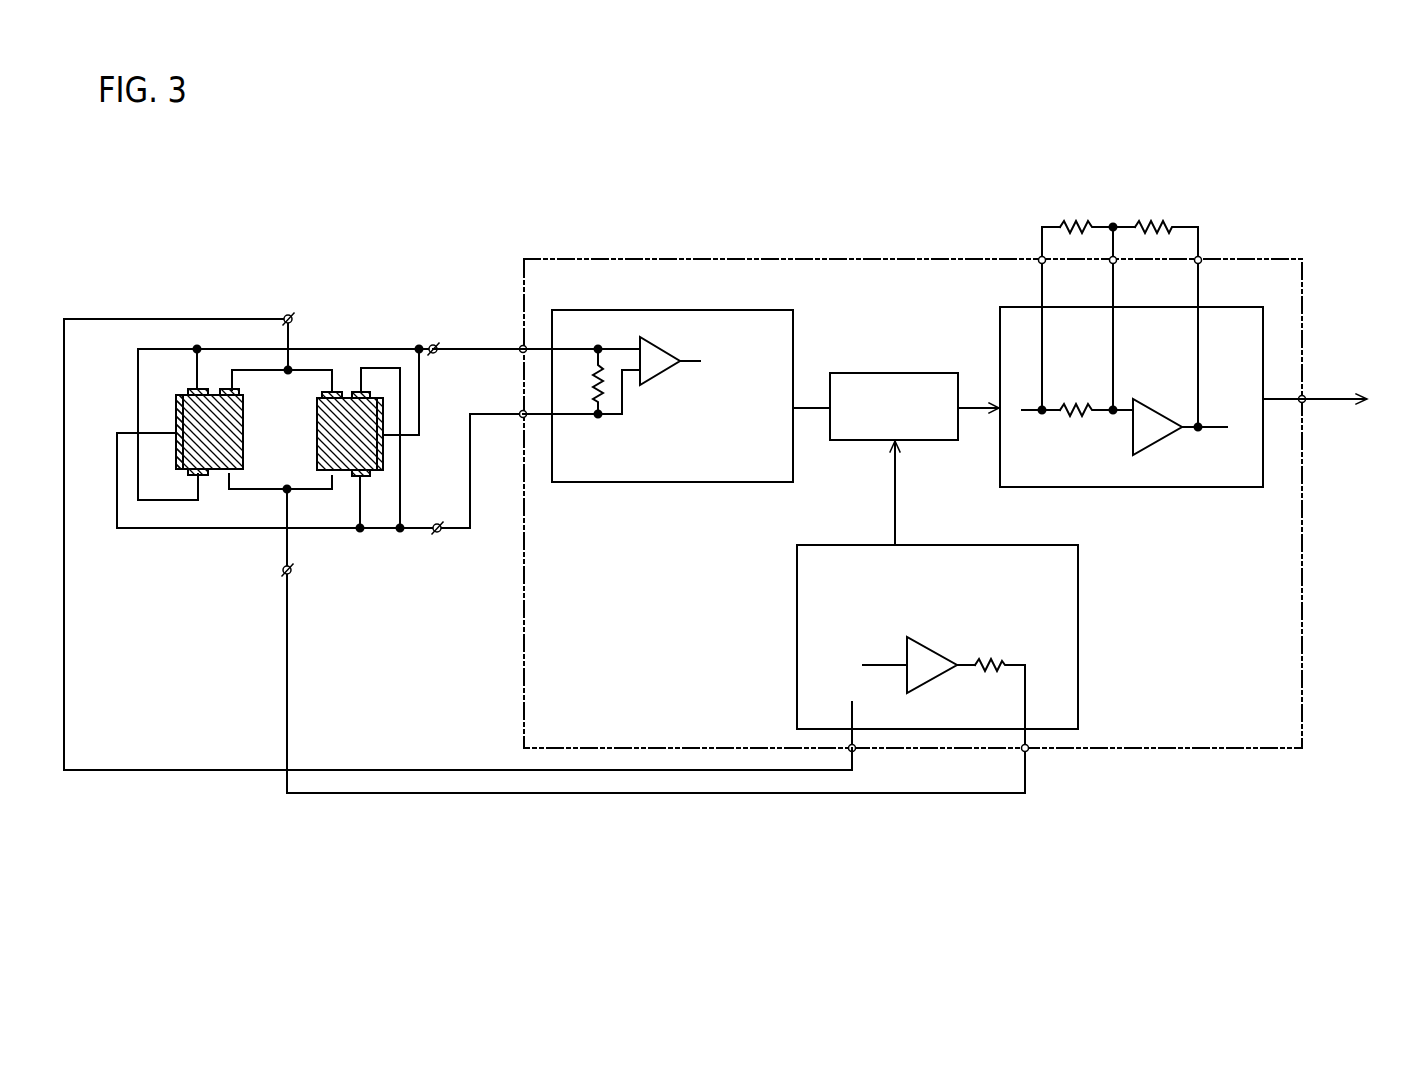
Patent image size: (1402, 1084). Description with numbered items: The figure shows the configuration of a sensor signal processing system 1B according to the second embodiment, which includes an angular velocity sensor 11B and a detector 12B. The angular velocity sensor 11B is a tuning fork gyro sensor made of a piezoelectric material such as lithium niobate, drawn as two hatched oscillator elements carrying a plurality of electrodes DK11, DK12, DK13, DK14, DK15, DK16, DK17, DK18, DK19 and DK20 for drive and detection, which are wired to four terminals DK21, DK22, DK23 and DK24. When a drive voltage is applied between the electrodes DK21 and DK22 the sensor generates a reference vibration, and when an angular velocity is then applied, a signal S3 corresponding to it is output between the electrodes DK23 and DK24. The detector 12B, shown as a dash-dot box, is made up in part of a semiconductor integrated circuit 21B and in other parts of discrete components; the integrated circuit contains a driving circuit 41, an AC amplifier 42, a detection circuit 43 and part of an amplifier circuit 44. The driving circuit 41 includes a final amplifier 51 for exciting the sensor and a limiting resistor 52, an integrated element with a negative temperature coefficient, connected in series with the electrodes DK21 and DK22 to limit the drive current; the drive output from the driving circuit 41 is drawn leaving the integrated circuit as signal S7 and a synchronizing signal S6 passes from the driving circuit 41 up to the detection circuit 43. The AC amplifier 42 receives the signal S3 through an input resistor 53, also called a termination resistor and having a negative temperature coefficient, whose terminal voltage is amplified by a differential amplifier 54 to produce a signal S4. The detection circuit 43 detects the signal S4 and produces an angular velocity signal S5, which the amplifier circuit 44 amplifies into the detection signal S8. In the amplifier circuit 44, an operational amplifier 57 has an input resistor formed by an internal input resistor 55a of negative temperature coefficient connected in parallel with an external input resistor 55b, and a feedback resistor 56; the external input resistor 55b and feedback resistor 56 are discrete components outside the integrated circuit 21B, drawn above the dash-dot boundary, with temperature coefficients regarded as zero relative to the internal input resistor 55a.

The sensor signal processing system 1B is at (691, 105).
The angular velocity sensor 11B is at (368, 272).
The detector 12B is at (871, 228).
The semiconductor integrated circuit 21B is at (712, 249).
The electrode DK11 is at (203, 474).
The electrode DK12 is at (223, 476).
The electrode DK13 is at (203, 345).
The electrode DK14 is at (225, 387).
The electrode DK15 is at (176, 410).
The electrode DK16 is at (333, 476).
The electrode DK17 is at (364, 476).
The electrode DK18 is at (335, 390).
The electrode DK19 is at (363, 390).
The electrode DK20 is at (383, 450).
The electrode DK21 is at (289, 577).
The electrode DK22 is at (291, 316).
The electrode DK23 is at (439, 534).
The electrode DK24 is at (435, 343).
The driving circuit 41 is at (1080, 620).
The AC amplifier 42 is at (731, 310).
The detection circuit 43 is at (884, 373).
The amplifier circuit 44 is at (1235, 307).
The final amplifier 51 is at (924, 642).
The limiting resistor 52 is at (1000, 650).
The input resistor 53 is at (598, 378).
The differential amplifier 54 is at (660, 375).
The internal input resistor 55a is at (1073, 402).
The external input resistor 55b is at (1075, 220).
The feedback resistor 56 is at (1152, 220).
The operational amplifier 57 is at (1177, 428).
The signal S3 is at (478, 368).
The signal S4 is at (798, 404).
The angular velocity signal S5 is at (972, 404).
The synchronizing signal S6 is at (894, 494).
The drive signal S7 is at (872, 771).
The detection signal S8 is at (1315, 379).